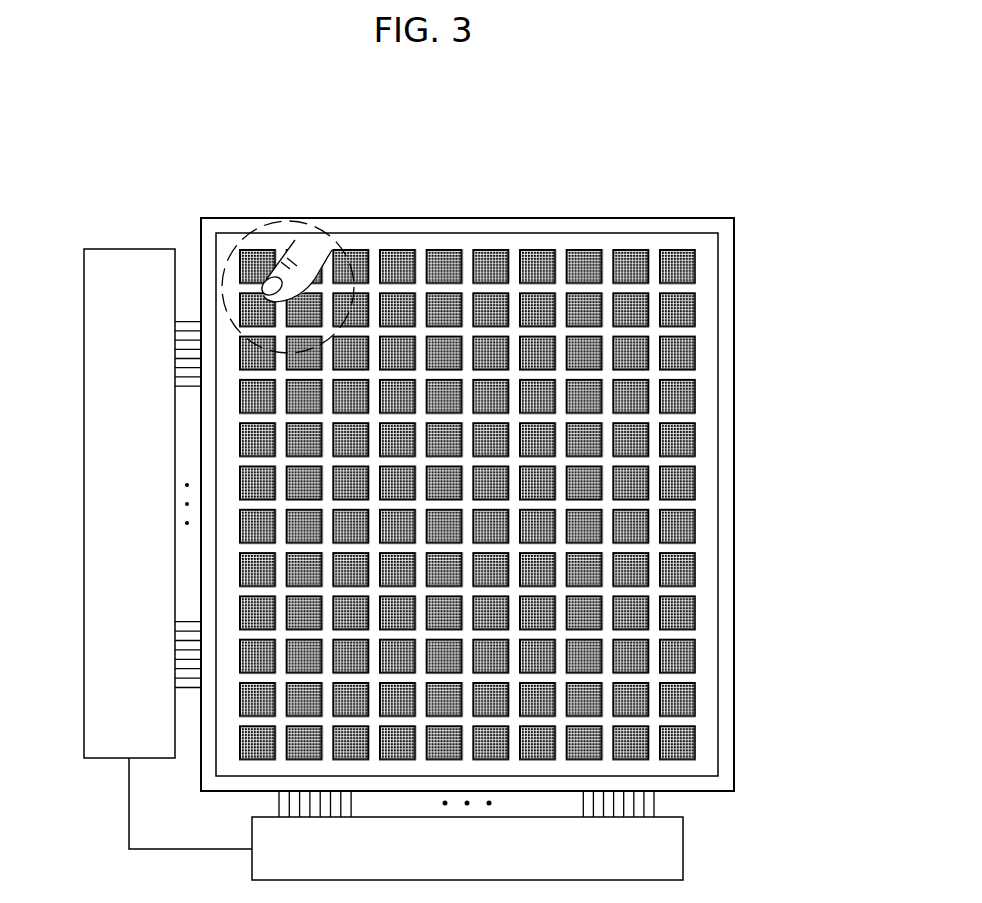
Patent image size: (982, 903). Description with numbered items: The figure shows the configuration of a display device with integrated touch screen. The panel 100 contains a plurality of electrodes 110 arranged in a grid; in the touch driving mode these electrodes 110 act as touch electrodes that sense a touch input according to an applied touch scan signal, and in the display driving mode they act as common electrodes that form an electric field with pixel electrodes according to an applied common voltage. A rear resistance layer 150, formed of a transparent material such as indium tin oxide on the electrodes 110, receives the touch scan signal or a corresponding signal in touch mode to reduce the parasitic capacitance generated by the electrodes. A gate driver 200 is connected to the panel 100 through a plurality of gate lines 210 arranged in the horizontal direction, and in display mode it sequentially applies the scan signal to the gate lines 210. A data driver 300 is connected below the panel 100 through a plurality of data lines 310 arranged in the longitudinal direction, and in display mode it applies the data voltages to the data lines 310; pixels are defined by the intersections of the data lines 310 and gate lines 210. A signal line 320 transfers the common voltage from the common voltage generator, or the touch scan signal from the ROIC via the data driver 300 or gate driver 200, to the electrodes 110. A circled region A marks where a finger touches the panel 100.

The panel 100 is at (734, 305).
The rear resistance layer 150 is at (718, 393).
The electrodes 110 is at (678, 483).
The gate driver 200 is at (146, 511).
The gate lines 210 is at (187, 688).
The data driver 300 is at (450, 863).
The data lines 310 is at (536, 804).
The signal line 320 is at (655, 800).
The touched region A is at (240, 243).